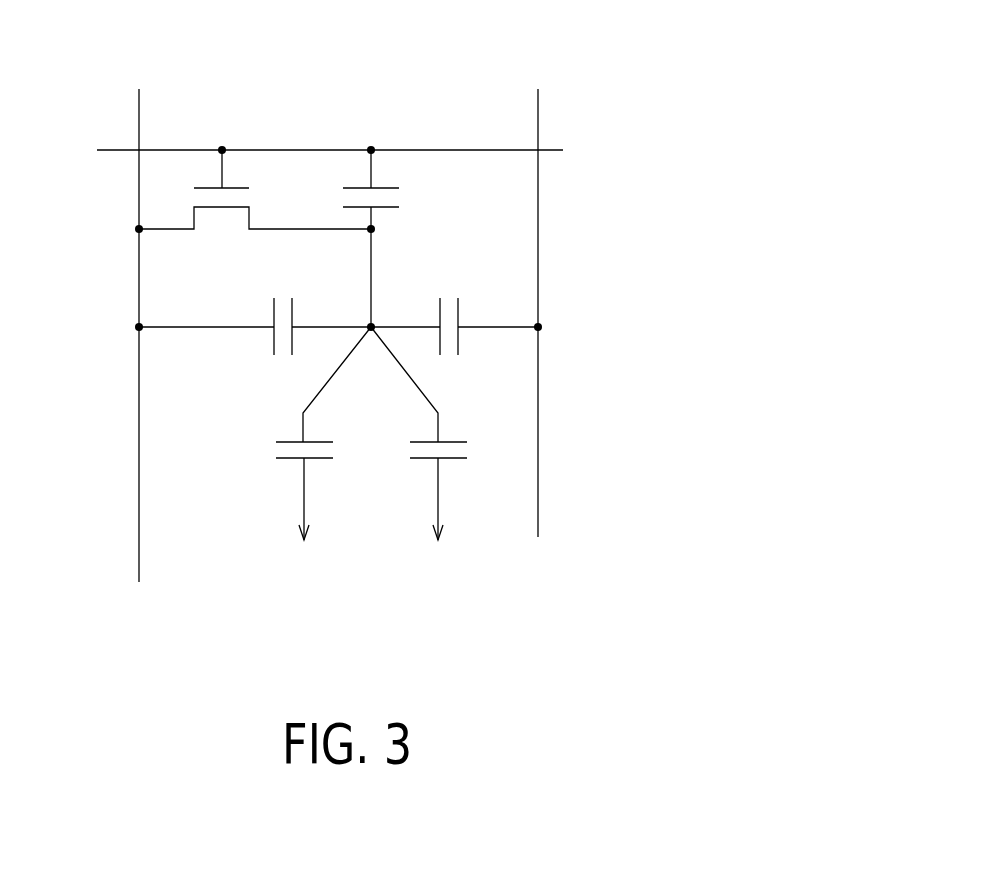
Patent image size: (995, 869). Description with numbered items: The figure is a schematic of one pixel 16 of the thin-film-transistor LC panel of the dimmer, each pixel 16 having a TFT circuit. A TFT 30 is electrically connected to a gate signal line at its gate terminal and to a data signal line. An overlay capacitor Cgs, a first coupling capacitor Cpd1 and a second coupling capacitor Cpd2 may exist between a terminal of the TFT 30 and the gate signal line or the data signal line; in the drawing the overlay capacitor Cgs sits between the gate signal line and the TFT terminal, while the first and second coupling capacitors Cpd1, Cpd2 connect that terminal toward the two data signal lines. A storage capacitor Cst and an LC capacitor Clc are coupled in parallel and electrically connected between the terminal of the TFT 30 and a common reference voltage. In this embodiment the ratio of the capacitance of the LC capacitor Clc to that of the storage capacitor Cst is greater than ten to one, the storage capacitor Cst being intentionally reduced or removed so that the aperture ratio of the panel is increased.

The pixel 16 is at (396, 313).
The TFT 30 is at (250, 198).
The overlay capacitor Cgs is at (400, 238).
The first coupling capacitor Cpd1 is at (255, 306).
The second coupling capacitor Cpd2 is at (454, 306).
The storage capacitor Cst is at (298, 448).
The LC capacitor Clc is at (446, 448).